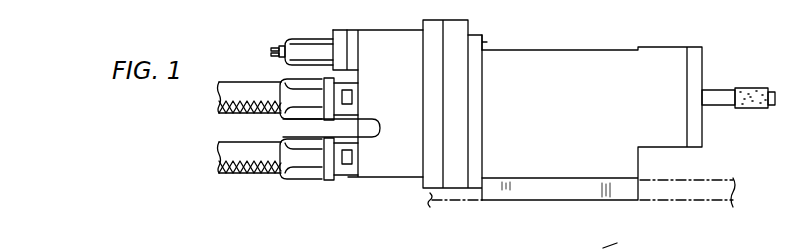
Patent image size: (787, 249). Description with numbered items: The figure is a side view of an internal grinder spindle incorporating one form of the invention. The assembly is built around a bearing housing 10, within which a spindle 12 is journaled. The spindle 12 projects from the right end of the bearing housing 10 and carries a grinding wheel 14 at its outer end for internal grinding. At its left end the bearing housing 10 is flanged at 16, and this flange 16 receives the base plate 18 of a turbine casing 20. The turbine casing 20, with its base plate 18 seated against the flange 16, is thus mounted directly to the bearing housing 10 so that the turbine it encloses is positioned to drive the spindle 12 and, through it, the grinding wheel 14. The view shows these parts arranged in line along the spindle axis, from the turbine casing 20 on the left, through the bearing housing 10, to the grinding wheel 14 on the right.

The bearing housing 10 is at (561, 50).
The spindle 12 is at (715, 93).
The grinding wheel 14 is at (745, 109).
The flange 16 is at (485, 43).
The base plate 18 is at (452, 178).
The turbine casing 20 is at (394, 38).